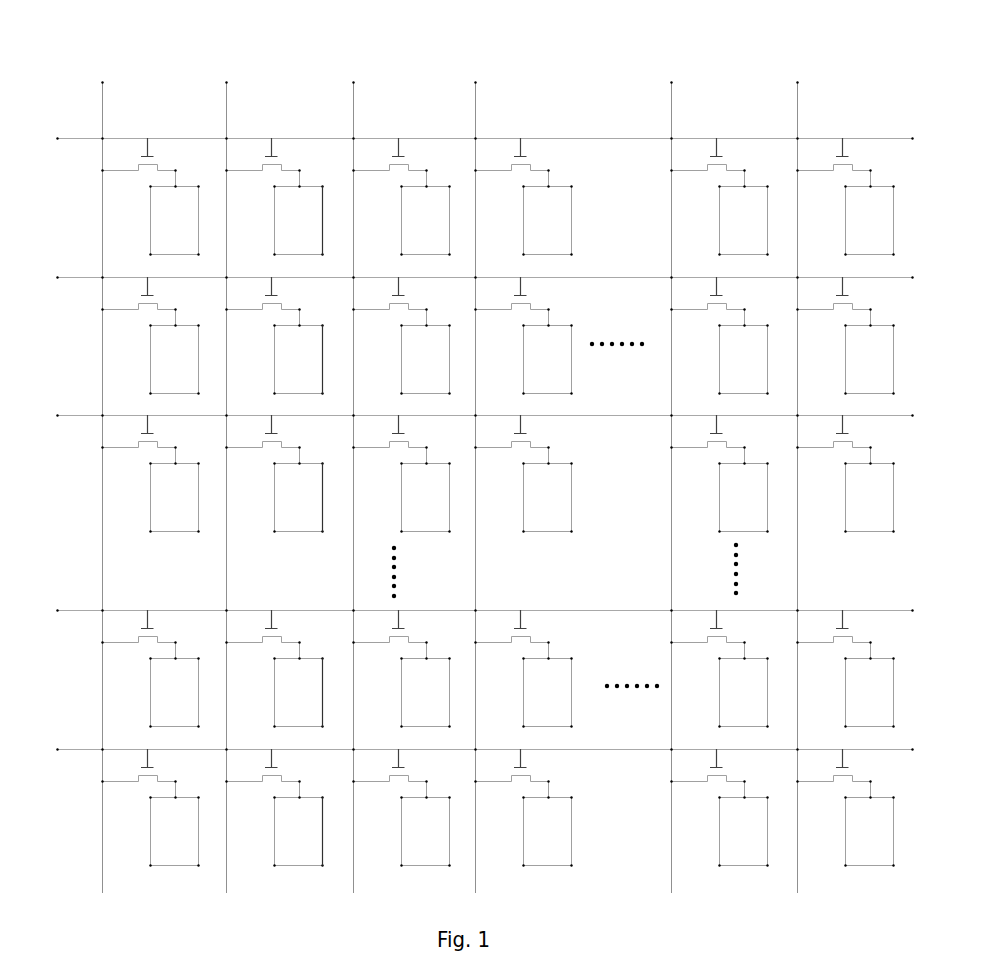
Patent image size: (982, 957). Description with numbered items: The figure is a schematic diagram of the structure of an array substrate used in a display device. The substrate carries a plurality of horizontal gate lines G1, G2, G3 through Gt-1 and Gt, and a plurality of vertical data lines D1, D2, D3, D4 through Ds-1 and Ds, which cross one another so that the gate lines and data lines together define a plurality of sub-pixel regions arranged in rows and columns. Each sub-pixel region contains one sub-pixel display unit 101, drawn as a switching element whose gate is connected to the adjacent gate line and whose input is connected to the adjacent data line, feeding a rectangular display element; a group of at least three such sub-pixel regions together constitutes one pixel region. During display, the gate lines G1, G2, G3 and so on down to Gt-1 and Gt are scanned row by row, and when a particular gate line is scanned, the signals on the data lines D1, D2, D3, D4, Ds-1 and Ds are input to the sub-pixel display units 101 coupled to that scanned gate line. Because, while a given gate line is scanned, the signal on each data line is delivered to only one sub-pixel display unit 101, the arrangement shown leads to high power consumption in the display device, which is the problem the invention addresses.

The sub-pixel display unit 101 is at (167, 218).
The data line D1 is at (102, 473).
The data line D2 is at (227, 473).
The data line D3 is at (351, 473).
The data line D4 is at (474, 472).
The data line Ds-1 is at (673, 475).
The data line Ds is at (798, 473).
The gate line G1 is at (470, 138).
The gate line G2 is at (469, 276).
The gate line G3 is at (469, 415).
The gate line Gt-1 is at (461, 610).
The gate line Gt is at (469, 749).